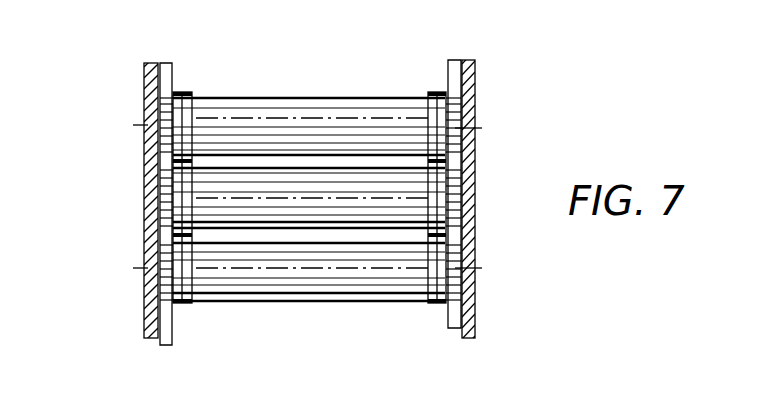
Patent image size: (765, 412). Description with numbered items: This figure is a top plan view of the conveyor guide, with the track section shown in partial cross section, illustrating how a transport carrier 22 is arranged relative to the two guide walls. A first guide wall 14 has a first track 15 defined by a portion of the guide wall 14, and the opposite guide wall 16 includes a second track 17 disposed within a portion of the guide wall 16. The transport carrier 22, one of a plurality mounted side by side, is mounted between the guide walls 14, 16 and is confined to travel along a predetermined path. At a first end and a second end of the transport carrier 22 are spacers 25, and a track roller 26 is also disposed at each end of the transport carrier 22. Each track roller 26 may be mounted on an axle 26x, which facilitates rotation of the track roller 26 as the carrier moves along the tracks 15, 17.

The first guide wall 14 is at (148, 287).
The first track 15 is at (162, 340).
The guide wall 16 is at (474, 257).
The second track 17 is at (456, 335).
The transport carrier 22 is at (331, 98).
The spacer 25 is at (183, 92).
The track roller 26 is at (170, 110).
The axle 26x is at (150, 192).